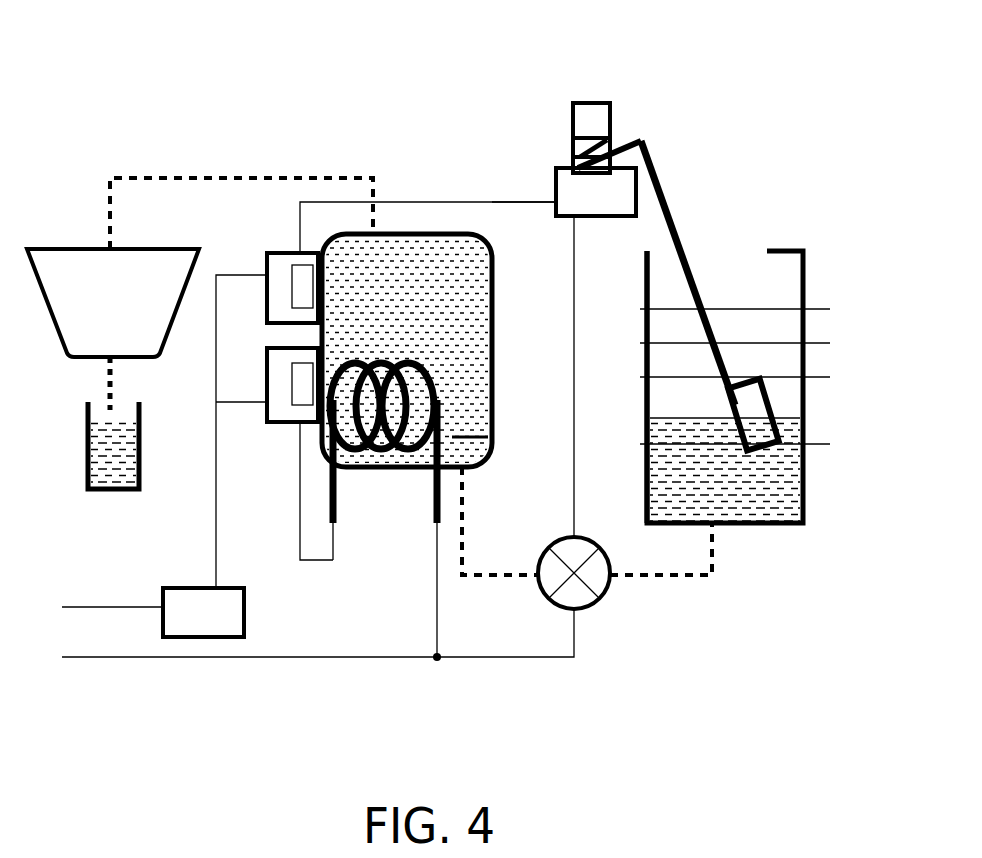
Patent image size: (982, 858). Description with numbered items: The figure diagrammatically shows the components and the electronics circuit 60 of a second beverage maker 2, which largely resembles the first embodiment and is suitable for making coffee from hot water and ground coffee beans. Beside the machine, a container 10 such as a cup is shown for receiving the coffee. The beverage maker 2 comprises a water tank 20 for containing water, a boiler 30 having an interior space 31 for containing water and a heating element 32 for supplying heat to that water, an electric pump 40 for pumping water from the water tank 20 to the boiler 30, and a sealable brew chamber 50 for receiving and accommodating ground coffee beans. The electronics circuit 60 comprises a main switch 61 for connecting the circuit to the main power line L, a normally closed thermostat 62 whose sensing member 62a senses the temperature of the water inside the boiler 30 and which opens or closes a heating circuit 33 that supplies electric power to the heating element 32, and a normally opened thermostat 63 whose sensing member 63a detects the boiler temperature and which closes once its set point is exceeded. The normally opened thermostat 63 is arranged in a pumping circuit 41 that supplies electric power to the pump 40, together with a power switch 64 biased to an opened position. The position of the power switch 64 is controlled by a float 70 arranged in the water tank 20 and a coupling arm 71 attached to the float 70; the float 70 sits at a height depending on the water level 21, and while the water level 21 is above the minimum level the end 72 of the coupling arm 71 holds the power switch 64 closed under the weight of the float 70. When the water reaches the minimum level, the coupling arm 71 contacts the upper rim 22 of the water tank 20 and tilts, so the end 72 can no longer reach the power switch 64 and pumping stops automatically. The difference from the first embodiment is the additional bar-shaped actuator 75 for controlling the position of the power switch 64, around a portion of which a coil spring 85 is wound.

The second beverage maker 2 is at (165, 68).
The container 10 is at (100, 458).
The water tank 20 is at (736, 272).
The water level 21 is at (785, 418).
The upper rim 22 is at (645, 252).
The boiler 30 is at (428, 250).
The interior space 31 is at (366, 248).
The heating element 32 is at (440, 388).
The heating circuit 33 is at (304, 592).
The electric pump 40 is at (585, 602).
The pumping circuit 41 is at (500, 178).
The brew chamber 50 is at (113, 329).
The electronics circuit 60 is at (502, 690).
The main switch 61 is at (203, 612).
The normally closed thermostat 62 is at (278, 425).
The sensing member 62a is at (296, 398).
The normally opened thermostat 63 is at (277, 250).
The sensing member 63a is at (296, 290).
The power switch 64 is at (596, 192).
The float 70 is at (740, 410).
The coupling arm 71 is at (676, 243).
The end of coupling arm 72 is at (622, 140).
The actuator 75 is at (572, 112).
The coil spring 85 is at (592, 137).